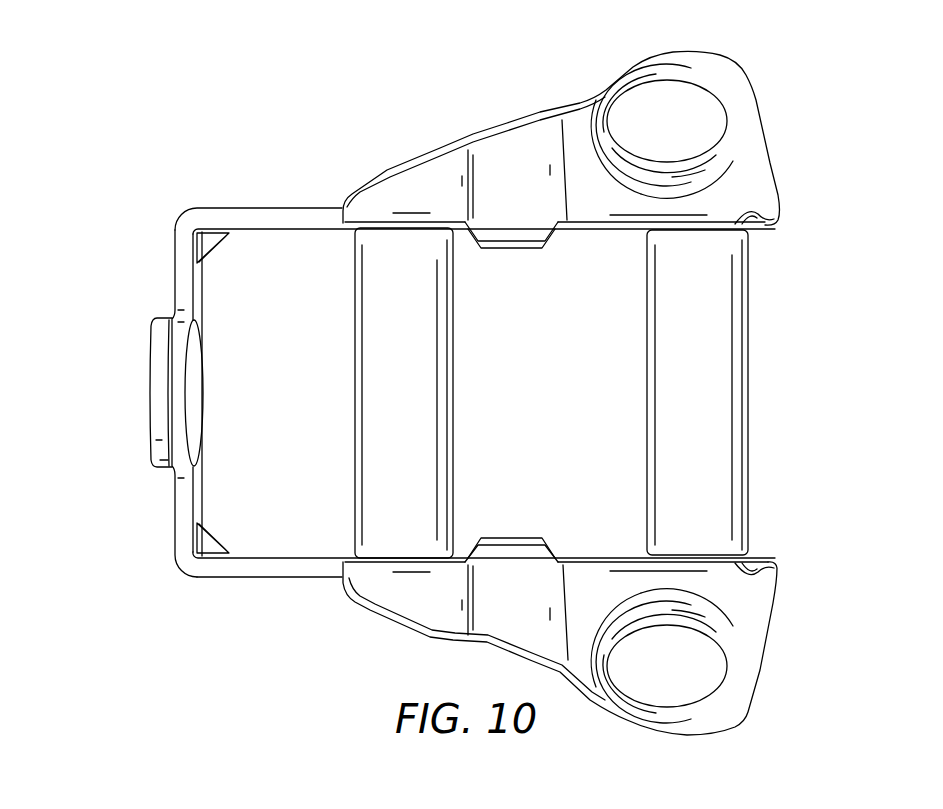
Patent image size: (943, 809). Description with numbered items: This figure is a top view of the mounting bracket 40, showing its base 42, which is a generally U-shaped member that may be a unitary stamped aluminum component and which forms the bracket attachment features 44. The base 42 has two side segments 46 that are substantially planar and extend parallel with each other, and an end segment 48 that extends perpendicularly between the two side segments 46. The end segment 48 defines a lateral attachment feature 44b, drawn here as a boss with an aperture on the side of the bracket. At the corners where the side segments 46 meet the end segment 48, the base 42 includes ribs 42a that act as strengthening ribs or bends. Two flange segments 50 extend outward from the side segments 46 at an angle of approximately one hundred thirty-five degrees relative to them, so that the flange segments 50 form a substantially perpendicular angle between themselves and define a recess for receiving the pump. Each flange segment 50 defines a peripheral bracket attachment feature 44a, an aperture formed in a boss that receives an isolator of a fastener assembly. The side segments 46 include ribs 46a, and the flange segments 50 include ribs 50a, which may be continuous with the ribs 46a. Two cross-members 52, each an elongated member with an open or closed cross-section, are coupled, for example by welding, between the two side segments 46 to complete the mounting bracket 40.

The mounting bracket 40 is at (449, 375).
The base 42 is at (243, 108).
The ribs 42a is at (196, 230).
The bracket attachment features 44 is at (449, 369).
The peripheral bracket attachment features 44a is at (712, 110).
The lateral attachment feature 44b is at (192, 384).
The side segments 46 is at (432, 399).
The ribs 46a is at (513, 537).
The end segment 48 is at (183, 268).
The flange segments 50 is at (590, 393).
The ribs 50a is at (515, 145).
The cross-members 52 is at (427, 387).